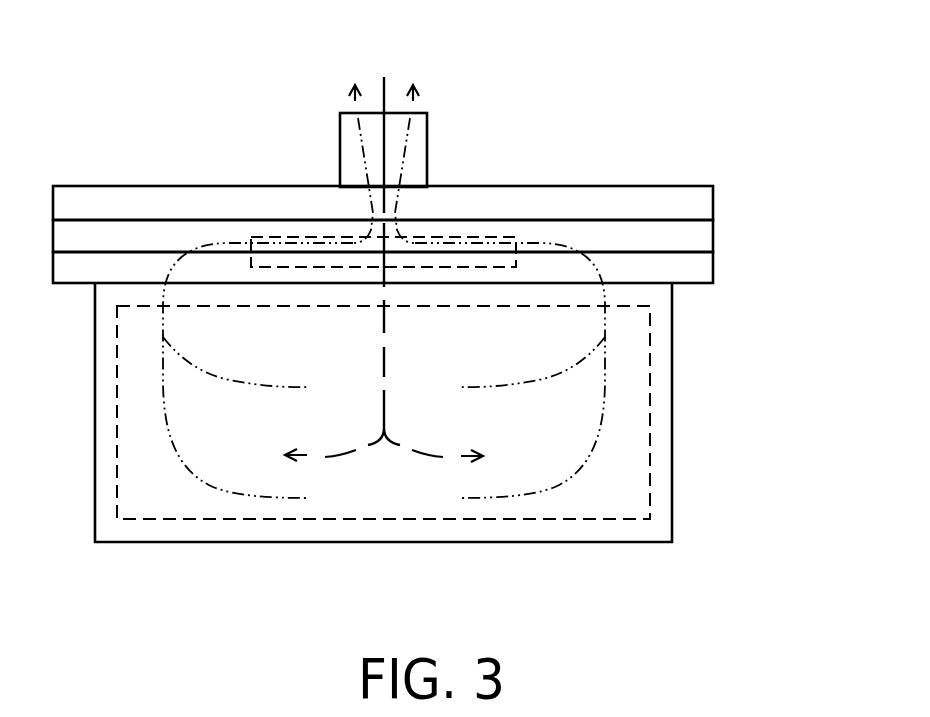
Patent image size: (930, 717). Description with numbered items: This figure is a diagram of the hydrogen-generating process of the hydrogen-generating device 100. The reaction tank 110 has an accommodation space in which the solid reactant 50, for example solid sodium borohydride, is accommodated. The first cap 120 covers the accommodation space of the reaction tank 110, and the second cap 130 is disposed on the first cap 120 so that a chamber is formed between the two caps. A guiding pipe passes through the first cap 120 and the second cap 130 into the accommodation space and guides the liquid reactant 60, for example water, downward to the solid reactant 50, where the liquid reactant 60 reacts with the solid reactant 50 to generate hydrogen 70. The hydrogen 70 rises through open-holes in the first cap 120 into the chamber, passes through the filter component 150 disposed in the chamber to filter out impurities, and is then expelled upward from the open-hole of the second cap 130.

The hydrogen-generating device 100 is at (672, 617).
The reaction tank 110 is at (660, 348).
The first cap 120 is at (709, 236).
The second cap 130 is at (706, 203).
The filter component 150 is at (253, 237).
The solid reactant 50 is at (649, 423).
The liquid reactant 60 is at (390, 77).
The hydrogen 70 is at (357, 98).